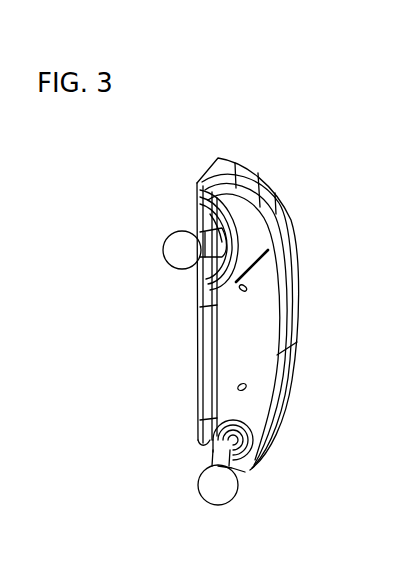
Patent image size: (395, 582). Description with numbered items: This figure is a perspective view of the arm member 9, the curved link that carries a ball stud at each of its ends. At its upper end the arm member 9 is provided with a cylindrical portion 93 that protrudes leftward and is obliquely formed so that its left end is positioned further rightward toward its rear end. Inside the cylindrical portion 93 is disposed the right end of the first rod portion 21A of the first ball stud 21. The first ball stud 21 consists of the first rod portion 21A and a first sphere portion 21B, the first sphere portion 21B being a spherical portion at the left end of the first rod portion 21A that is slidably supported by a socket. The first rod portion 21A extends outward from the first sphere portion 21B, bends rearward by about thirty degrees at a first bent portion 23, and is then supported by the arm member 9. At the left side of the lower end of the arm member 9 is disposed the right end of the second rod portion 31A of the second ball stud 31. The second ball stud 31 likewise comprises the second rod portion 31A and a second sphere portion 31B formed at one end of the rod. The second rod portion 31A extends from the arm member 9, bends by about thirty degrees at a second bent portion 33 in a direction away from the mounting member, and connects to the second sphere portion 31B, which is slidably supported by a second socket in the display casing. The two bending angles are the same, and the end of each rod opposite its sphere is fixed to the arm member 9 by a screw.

The arm member 9 is at (287, 122).
The cylindrical portion 93 is at (265, 203).
The first bent portion 23 is at (187, 213).
The first ball stud 21 is at (170, 272).
The first rod portion 21A is at (186, 221).
The first sphere portion 21B is at (178, 253).
The second bent portion 33 is at (198, 423).
The second ball stud 31 is at (200, 503).
The second rod portion 31A is at (208, 455).
The second sphere portion 31B is at (218, 488).